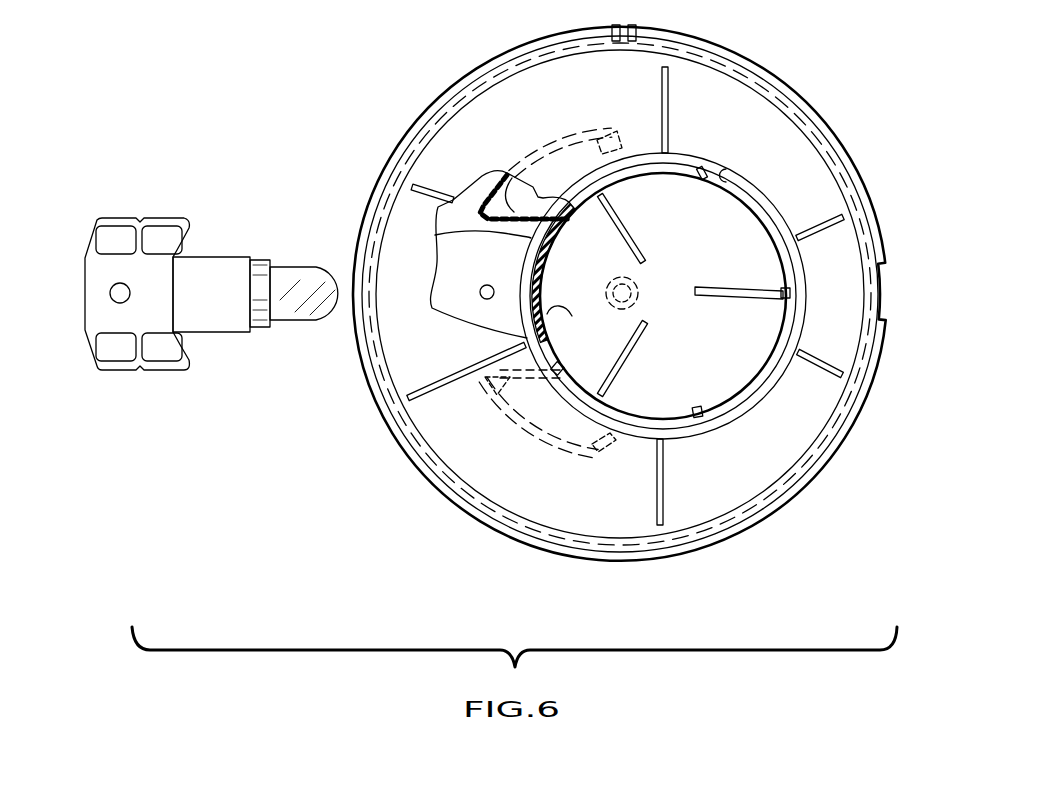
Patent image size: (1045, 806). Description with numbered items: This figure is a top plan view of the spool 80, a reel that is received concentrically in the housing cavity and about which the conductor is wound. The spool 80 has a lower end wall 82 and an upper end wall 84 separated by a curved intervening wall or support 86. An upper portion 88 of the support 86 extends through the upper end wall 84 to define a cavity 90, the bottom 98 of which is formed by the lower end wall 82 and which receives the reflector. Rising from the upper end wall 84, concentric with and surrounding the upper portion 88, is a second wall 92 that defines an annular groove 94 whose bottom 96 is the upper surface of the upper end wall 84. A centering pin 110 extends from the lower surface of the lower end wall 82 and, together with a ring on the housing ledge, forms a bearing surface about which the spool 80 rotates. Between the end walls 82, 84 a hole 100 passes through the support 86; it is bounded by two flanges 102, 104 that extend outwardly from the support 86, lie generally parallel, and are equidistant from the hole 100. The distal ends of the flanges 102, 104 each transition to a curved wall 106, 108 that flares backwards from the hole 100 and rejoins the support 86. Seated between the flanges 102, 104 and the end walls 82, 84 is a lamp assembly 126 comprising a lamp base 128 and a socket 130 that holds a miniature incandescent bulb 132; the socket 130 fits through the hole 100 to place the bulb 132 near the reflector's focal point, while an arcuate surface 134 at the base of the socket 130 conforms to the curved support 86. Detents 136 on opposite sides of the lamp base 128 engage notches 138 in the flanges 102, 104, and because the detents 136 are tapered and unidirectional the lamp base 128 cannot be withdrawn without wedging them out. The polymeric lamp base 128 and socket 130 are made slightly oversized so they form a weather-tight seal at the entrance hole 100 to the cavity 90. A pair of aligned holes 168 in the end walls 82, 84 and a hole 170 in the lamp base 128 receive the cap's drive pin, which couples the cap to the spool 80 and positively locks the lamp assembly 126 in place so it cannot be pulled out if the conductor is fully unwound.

The spool 80 is at (641, 293).
The lower end wall 82 is at (468, 275).
The upper end wall 84 is at (780, 118).
The intervening wall 86 is at (506, 264).
The upper portion 88 is at (870, 240).
The cavity 90 is at (767, 248).
The second wall 92 is at (752, 183).
The annular groove 94 is at (717, 170).
The bottom 96 is at (700, 175).
The bottom 98 is at (665, 371).
The hole 100 is at (572, 316).
The flange 102 is at (500, 420).
The flange 104 is at (537, 205).
The curved wall 106 is at (522, 420).
The curved wall 108 is at (555, 145).
The centering pin 110 is at (640, 283).
The lamp assembly 126 is at (188, 258).
The lamp base 128 is at (100, 272).
The socket 130 is at (213, 257).
The bulb 132 is at (303, 270).
The surface 134 is at (190, 365).
The detent 136 is at (142, 218).
The notch 138 is at (512, 200).
The hole 168 is at (481, 292).
The hole 170 is at (112, 297).